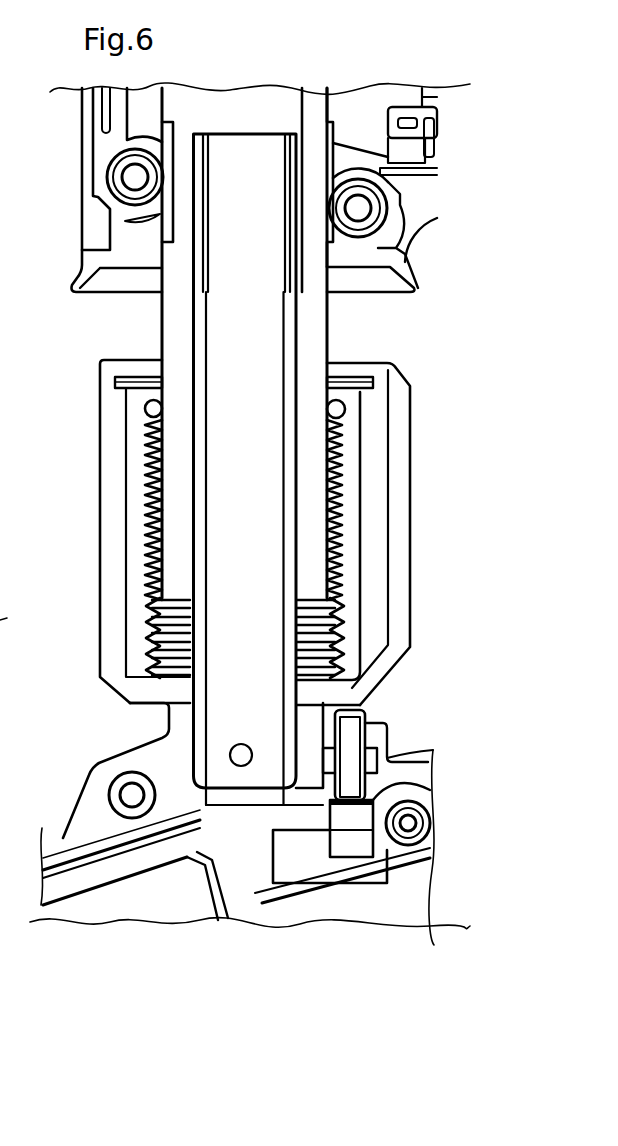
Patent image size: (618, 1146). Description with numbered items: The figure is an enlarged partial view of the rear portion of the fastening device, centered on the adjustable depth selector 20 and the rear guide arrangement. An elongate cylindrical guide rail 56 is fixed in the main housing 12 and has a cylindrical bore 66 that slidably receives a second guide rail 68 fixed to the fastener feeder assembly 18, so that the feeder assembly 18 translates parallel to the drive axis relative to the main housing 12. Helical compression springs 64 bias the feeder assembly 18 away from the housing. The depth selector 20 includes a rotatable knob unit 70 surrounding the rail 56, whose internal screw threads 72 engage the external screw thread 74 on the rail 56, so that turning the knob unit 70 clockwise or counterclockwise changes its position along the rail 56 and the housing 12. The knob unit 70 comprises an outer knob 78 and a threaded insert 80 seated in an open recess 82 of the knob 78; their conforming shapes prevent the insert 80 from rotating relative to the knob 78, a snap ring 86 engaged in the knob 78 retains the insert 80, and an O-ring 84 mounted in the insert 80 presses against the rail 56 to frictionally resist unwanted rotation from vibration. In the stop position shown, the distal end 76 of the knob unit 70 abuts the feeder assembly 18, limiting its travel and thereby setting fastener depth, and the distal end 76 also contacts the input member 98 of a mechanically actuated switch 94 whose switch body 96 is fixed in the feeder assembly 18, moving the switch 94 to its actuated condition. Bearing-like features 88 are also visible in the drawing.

The main housing 12 is at (80, 266).
The bearing 88 is at (193, 193).
The cylindrical bore 66 is at (293, 112).
The guide rail 68 is at (197, 340).
The guide rail 56 is at (160, 318).
The rotatable knob unit 70 is at (100, 417).
The adjustable depth selector 20 is at (63, 455).
The snap ring 86 is at (352, 367).
The O-ring 84 is at (342, 408).
The threaded insert 80 is at (143, 495).
The external screw thread 74 is at (150, 530).
The internal screw threads 72 is at (153, 607).
The outer knob 78 is at (378, 485).
The open recess 82 is at (355, 545).
The helical compression springs 64 is at (18, 601).
The distal end 76 is at (143, 722).
The fastener feeder assembly 18 is at (73, 787).
The input member 98 is at (373, 713).
The switch body 96 is at (353, 828).
The switch 94 is at (350, 843).